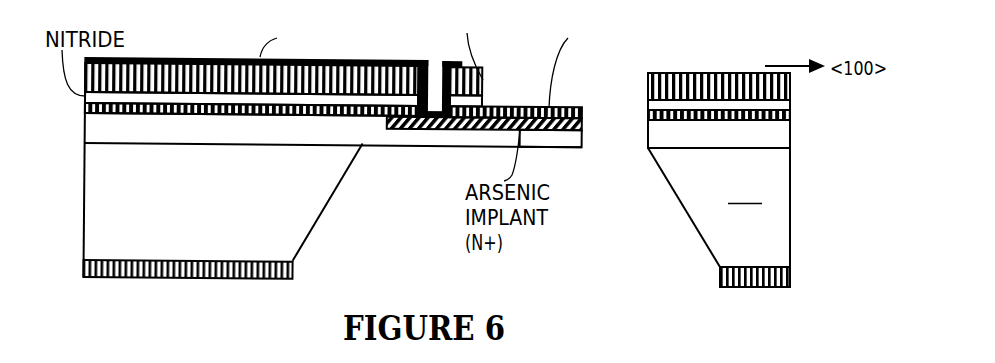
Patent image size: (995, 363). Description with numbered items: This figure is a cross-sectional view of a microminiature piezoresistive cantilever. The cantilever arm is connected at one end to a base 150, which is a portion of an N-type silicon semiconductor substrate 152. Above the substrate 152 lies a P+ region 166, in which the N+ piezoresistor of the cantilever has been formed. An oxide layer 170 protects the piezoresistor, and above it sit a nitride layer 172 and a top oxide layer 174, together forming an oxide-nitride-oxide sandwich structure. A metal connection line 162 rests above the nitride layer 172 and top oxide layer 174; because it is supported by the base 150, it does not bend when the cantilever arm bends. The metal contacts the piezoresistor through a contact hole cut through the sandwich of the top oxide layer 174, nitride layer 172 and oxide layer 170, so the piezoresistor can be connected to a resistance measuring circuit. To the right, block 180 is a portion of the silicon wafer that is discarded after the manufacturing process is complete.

The base 150 is at (85, 178).
The semiconductor substrate 152 is at (226, 192).
The metal connection line 162 is at (152, 56).
The P+ region 166 is at (95, 130).
The oxide layer 170 is at (551, 108).
The nitride layer 172 is at (483, 102).
The top oxide layer 174 is at (483, 82).
The block 180 is at (790, 172).